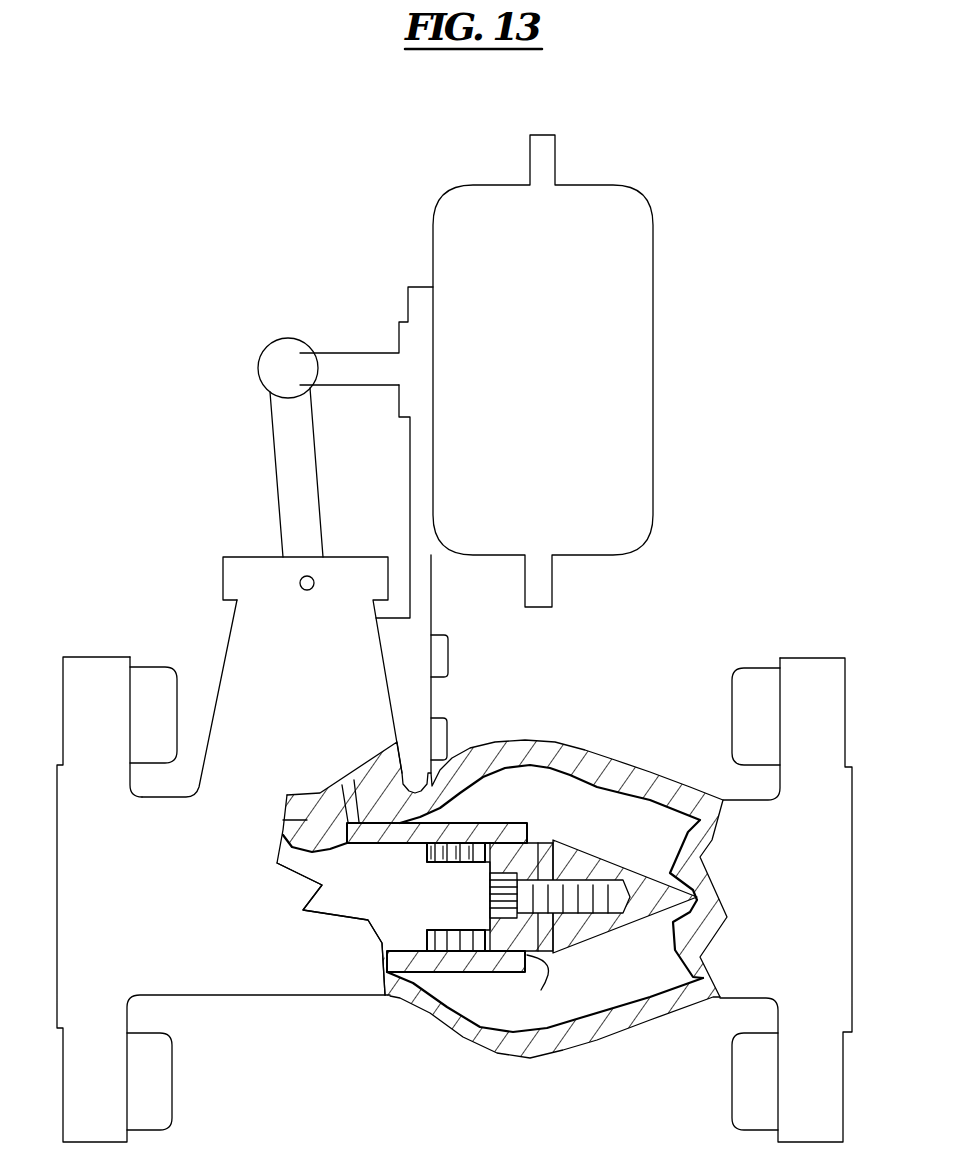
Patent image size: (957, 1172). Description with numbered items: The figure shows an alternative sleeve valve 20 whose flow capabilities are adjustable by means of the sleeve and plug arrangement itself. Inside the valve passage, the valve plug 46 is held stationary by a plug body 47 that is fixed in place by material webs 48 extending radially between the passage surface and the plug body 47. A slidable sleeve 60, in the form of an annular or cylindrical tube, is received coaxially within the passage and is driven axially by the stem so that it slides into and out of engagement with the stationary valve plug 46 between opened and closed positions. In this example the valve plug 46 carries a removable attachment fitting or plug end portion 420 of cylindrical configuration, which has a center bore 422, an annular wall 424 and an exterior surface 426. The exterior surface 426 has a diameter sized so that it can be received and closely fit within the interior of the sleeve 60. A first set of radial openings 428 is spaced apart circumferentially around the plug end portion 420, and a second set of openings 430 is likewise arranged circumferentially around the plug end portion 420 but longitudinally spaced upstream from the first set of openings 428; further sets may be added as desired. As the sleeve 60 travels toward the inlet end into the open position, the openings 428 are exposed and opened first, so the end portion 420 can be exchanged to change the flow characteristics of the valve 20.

The sleeve valve 20 is at (742, 362).
The valve plug 46 is at (565, 963).
The plug body 47 is at (600, 862).
The material webs 48 is at (653, 853).
The sleeve 60 is at (467, 832).
The plug end portion 420 is at (540, 838).
The center bore 422 is at (428, 857).
The annular wall 424 is at (385, 946).
The exterior surface 426 is at (469, 984).
The first set of radial openings 428 is at (466, 932).
The second set of openings 430 is at (442, 864).